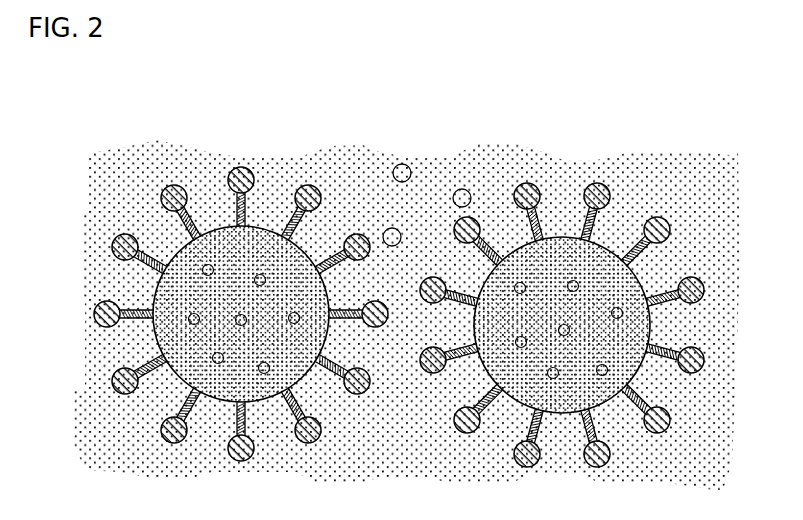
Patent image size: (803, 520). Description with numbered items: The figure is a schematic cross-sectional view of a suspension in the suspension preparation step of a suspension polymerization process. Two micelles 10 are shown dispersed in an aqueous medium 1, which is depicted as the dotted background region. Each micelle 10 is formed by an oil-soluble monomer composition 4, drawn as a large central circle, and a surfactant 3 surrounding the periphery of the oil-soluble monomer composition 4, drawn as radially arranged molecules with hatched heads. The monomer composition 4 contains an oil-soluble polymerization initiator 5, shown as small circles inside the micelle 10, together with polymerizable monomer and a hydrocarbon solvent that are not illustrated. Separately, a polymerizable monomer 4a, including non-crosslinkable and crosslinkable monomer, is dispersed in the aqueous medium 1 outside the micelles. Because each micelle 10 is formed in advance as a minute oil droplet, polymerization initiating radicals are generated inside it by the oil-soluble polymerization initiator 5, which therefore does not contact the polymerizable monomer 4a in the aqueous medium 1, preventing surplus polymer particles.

The aqueous medium 1 is at (138, 152).
The micelle 10 is at (399, 274).
The surfactant 3 is at (182, 178).
The oil-soluble monomer composition 4 is at (268, 230).
The polymerizable monomer 4a is at (405, 164).
The oil-soluble polymerization initiator 5 is at (218, 364).